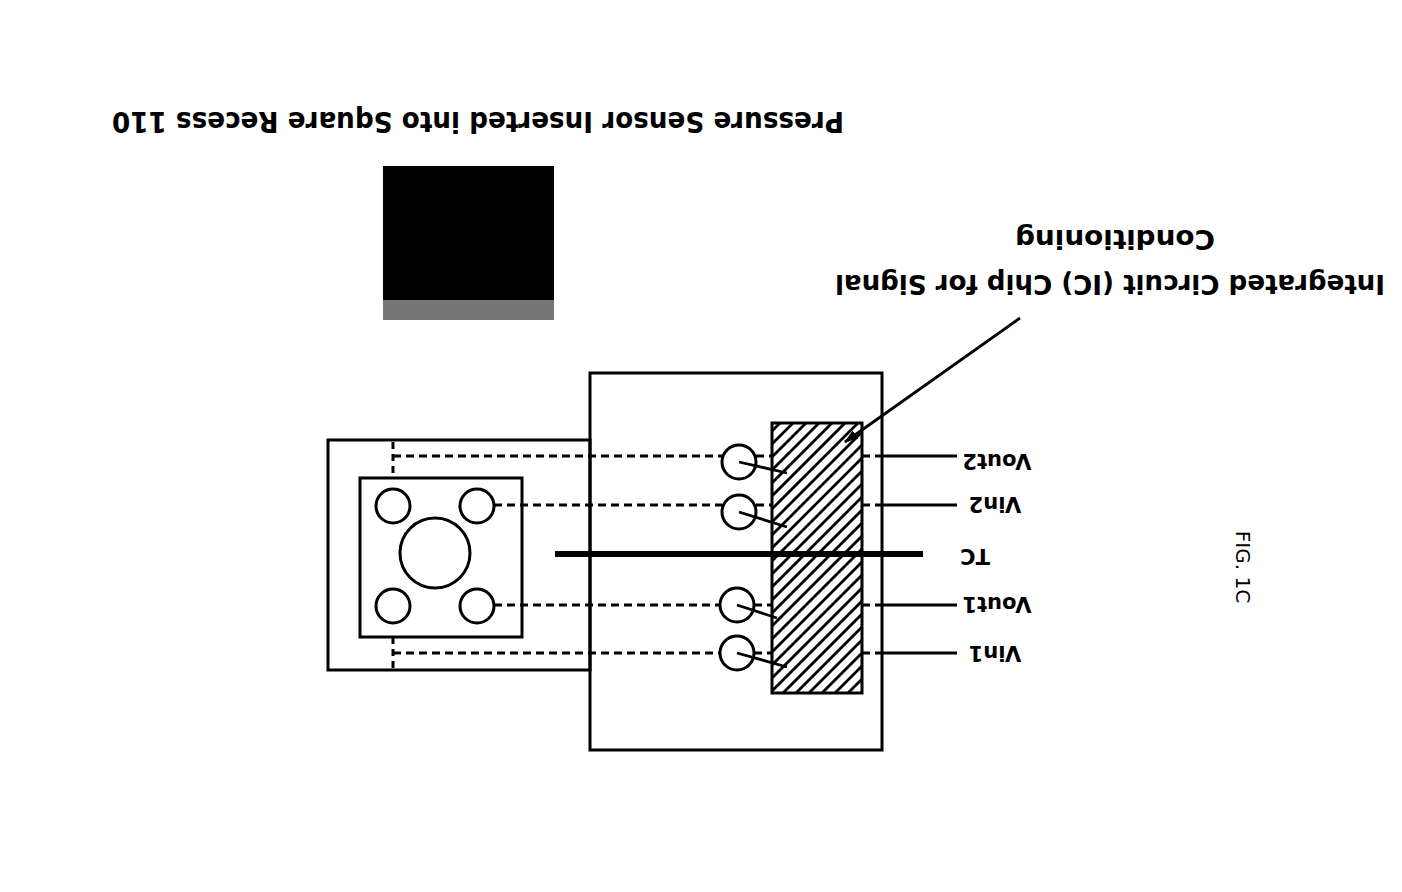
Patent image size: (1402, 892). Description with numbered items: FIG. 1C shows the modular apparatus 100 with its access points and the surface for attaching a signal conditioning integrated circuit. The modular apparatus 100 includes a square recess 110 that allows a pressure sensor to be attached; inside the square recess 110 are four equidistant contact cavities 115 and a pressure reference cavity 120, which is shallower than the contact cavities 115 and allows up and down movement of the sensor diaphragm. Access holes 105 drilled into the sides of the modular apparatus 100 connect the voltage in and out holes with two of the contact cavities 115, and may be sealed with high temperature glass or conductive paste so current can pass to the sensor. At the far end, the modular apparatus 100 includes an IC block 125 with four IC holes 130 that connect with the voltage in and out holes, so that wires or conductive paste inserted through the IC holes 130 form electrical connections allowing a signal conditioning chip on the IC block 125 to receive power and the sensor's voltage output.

The modular apparatus 100 is at (493, 672).
The access holes 105 is at (391, 438).
The square recess 110 is at (358, 553).
The equidistant contact cavities 115 is at (375, 609).
The pressure reference cavity 120 is at (437, 516).
The IC block 125 is at (738, 370).
The IC holes 130 is at (745, 671).